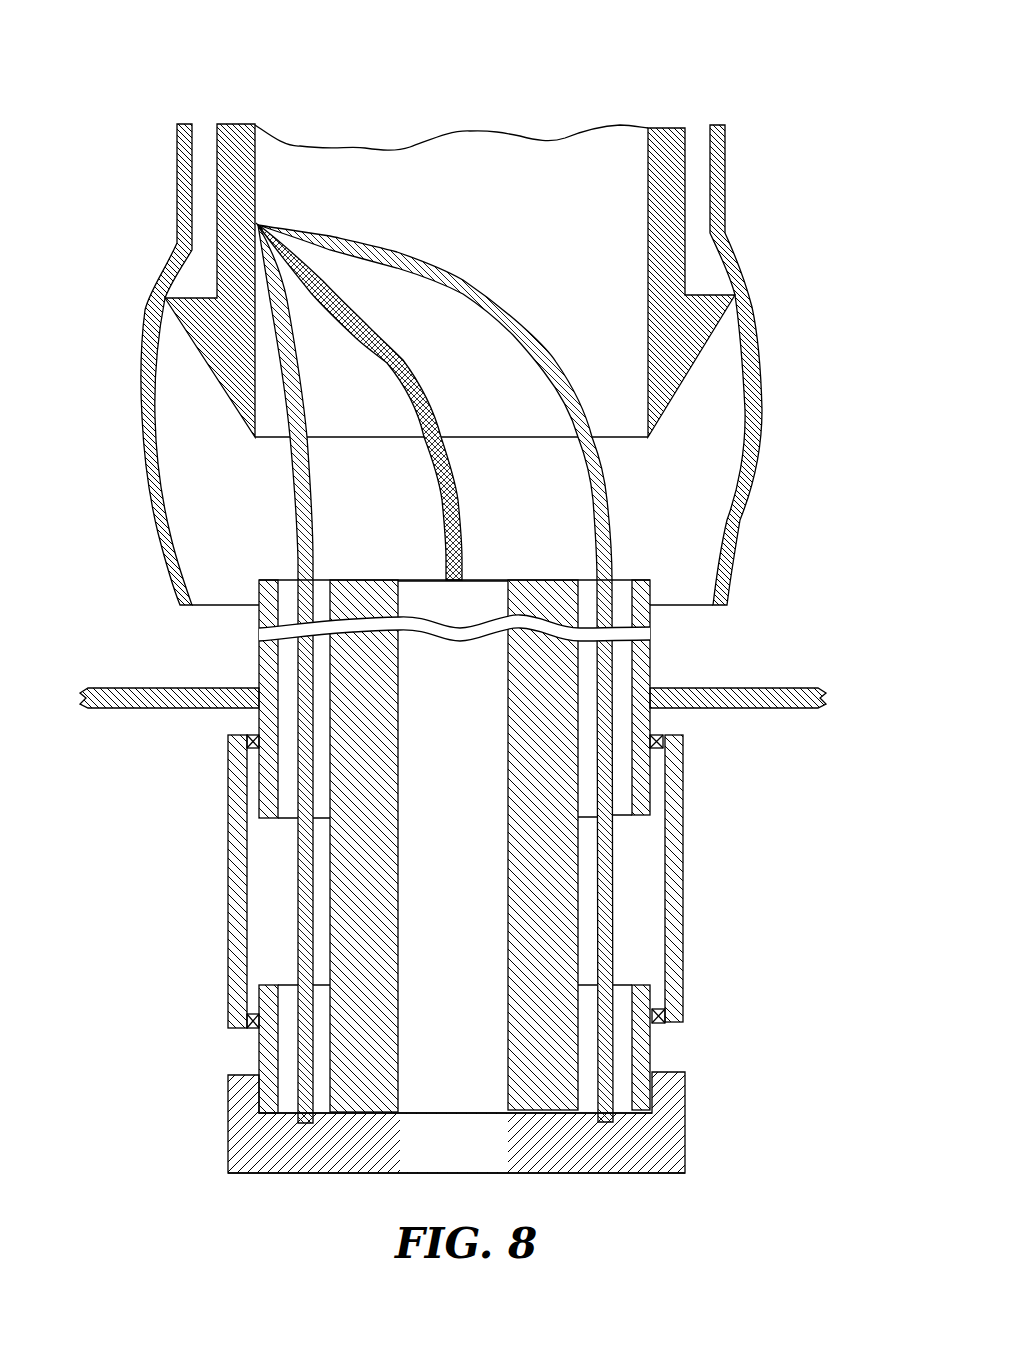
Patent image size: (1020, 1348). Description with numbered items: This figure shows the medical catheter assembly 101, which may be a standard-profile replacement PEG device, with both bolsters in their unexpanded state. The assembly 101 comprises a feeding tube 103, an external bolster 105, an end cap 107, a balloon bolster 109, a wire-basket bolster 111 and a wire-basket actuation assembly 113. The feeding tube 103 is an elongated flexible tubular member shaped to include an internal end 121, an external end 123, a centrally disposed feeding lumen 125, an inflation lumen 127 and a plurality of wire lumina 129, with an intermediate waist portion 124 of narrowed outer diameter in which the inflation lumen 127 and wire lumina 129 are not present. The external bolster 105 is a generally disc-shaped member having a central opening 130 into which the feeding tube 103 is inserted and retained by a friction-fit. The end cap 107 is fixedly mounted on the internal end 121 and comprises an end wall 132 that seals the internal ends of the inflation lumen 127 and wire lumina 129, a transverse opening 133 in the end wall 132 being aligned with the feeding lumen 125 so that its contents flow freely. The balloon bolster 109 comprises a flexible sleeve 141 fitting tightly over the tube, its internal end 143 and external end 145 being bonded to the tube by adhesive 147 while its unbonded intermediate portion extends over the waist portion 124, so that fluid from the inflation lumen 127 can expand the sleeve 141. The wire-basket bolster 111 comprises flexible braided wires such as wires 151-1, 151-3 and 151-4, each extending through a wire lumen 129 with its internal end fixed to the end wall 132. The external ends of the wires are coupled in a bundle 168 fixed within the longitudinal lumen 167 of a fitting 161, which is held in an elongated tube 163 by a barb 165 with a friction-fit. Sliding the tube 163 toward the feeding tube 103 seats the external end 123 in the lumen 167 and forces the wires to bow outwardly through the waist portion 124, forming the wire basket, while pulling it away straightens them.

The assembly 101 is at (290, 88).
The feeding tube 103 is at (250, 716).
The external bolster 105 is at (787, 685).
The end cap 107 is at (215, 1157).
The balloon bolster 109 is at (695, 830).
The wire-basket bolster 111 is at (290, 937).
The wire-basket actuation assembly 113 is at (752, 232).
The internal end 121 is at (377, 1112).
The external end 123 is at (538, 580).
The intermediate waist portion 124 is at (340, 892).
The feeding lumen 125 is at (479, 963).
The inflation lumen 127 is at (283, 600).
The wire lumina 129 is at (622, 797).
The central opening 130 is at (258, 688).
The end wall 132 is at (682, 1143).
The transverse opening 133 is at (479, 1155).
The sleeve 141 is at (683, 885).
The internal end 143 is at (672, 1025).
The external end 145 is at (668, 741).
The adhesive 147 is at (252, 1030).
The wire 151-1 is at (298, 838).
The wire 151-3 is at (605, 655).
The wire 151-4 is at (424, 393).
The fitting 161 is at (216, 216).
The elongated tube 163 is at (178, 163).
The barb 165 is at (172, 305).
The longitudinal lumen 167 is at (602, 193).
The bundle 168 is at (258, 225).